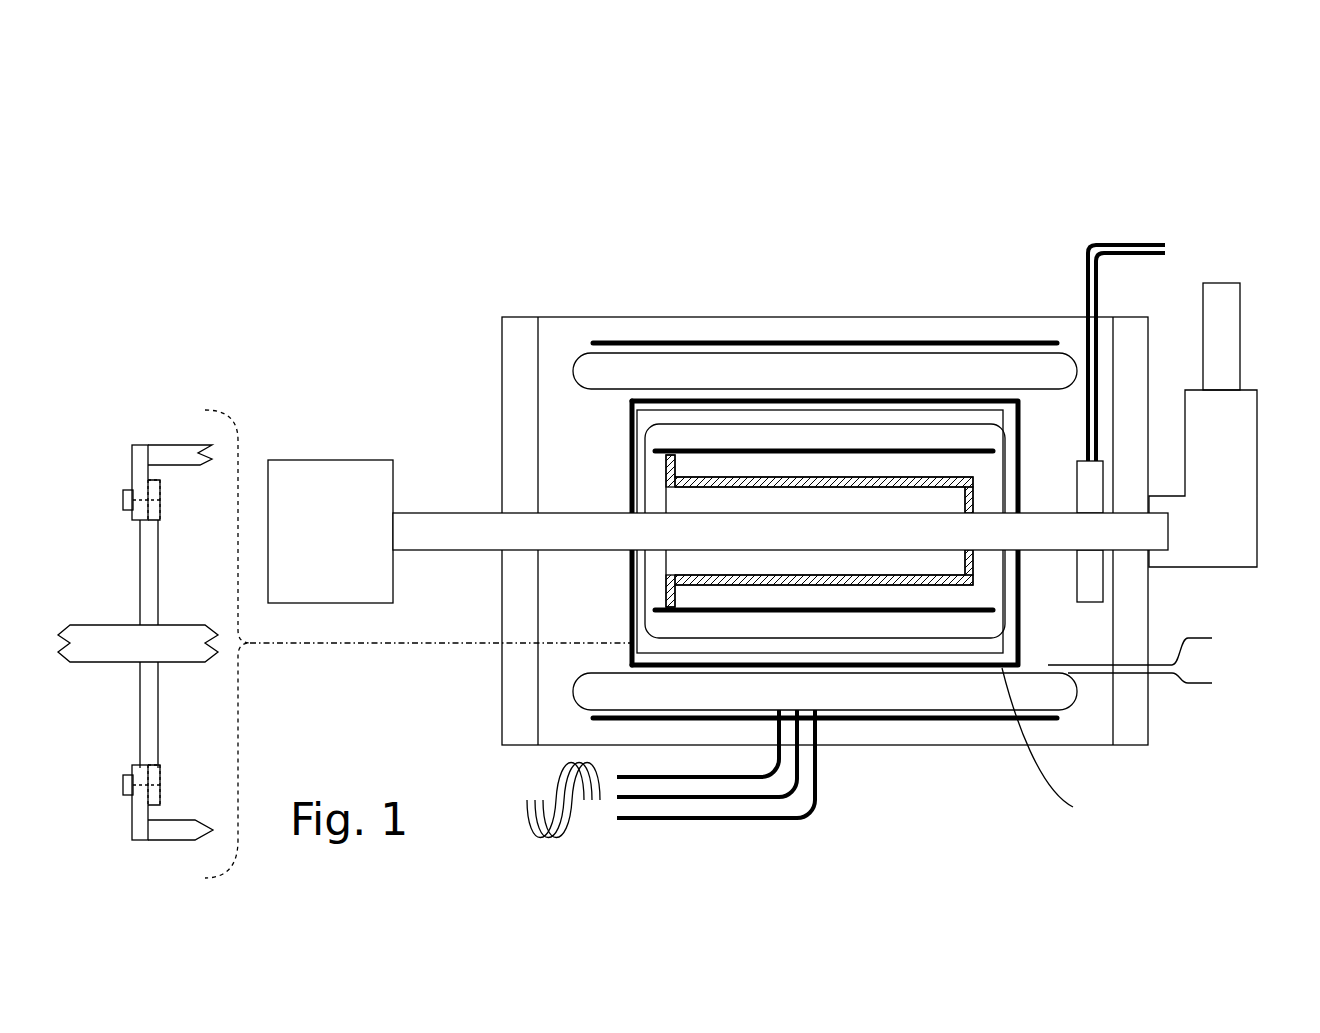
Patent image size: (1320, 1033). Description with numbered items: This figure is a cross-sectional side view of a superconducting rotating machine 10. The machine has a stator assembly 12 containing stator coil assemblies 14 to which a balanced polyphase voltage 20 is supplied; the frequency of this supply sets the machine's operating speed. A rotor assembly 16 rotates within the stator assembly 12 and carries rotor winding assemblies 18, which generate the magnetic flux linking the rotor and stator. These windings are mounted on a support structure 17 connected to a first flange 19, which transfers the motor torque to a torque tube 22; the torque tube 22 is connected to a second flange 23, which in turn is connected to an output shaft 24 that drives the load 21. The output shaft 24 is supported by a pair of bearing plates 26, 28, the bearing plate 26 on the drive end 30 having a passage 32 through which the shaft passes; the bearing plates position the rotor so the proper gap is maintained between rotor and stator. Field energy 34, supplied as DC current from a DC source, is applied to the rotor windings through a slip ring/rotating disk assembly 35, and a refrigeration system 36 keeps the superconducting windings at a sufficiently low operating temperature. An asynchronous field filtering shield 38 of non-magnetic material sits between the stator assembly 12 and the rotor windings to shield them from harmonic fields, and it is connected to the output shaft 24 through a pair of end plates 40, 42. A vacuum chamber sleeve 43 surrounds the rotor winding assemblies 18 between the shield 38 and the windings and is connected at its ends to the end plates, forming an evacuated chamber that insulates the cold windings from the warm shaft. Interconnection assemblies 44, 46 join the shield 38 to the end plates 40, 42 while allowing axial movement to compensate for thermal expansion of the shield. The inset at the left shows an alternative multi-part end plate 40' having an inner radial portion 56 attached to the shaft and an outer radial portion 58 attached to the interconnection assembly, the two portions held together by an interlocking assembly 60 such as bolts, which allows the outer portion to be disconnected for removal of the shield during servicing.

The superconducting rotating machine 10 is at (90, 97).
The stator assembly 12 is at (720, 325).
The stator coil assemblies 14 is at (895, 370).
The rotor assembly 16 is at (863, 598).
The support structure 17 is at (918, 613).
The rotor winding assemblies 18 is at (810, 628).
The first flange 19 is at (667, 467).
The balanced polyphase voltage 20 is at (520, 812).
The load 21 is at (370, 458).
The torque tube 22 is at (780, 455).
The second flange 23 is at (975, 497).
The output shaft 24 is at (426, 510).
The bearing plate 26 is at (515, 317).
The bearing plate 28 is at (1150, 594).
The drive end 30 is at (408, 208).
The passage 32 is at (521, 512).
The field energy 34 is at (1188, 218).
The slip ring/rotating disk assembly 35 is at (1090, 602).
The refrigeration system 36 is at (1262, 446).
The asynchronous field filtering shield 38 is at (133, 345).
The end plate 40 is at (504, 458).
The multi-part end plate 40' is at (84, 479).
The end plate 42 is at (1020, 403).
The vacuum chamber sleeve 43 is at (653, 410).
The interconnection assembly 44 is at (630, 400).
The interconnection assembly 46 is at (1018, 630).
The inner radial portion 56 is at (140, 740).
The outer radial portion 58 is at (130, 813).
The interlocking assembly 60 is at (132, 772).